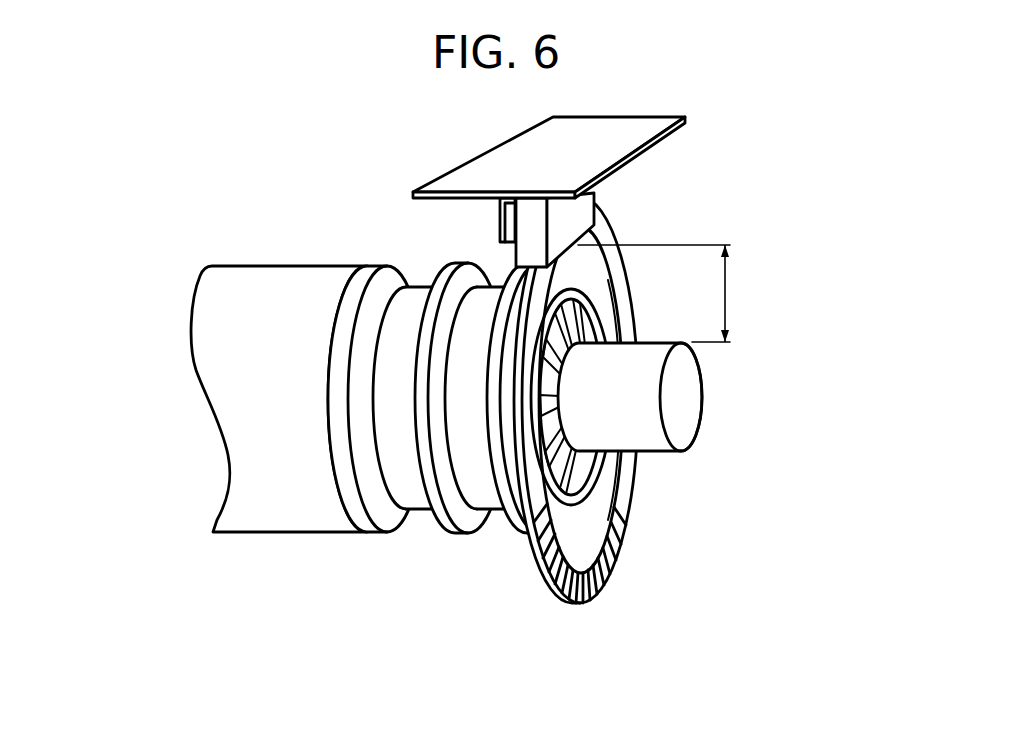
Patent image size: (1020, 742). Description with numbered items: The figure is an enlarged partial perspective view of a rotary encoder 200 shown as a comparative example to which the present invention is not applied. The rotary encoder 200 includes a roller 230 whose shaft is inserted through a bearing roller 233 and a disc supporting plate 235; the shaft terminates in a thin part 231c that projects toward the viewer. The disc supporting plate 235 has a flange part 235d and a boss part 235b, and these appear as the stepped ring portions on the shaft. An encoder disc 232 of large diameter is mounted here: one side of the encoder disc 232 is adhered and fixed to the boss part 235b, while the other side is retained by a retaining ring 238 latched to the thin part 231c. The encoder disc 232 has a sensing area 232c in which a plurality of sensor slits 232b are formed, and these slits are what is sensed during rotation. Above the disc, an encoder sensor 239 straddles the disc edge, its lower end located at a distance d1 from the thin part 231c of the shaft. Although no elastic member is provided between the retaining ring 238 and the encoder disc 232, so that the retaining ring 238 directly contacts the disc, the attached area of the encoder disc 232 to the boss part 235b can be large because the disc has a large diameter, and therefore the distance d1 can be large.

The rotary encoder 200 is at (381, 175).
The roller 230 is at (259, 525).
The thin part 231c is at (695, 384).
The encoder disc 232 is at (623, 416).
The sensor slits 232b is at (568, 560).
The sensing area 232c is at (596, 481).
The bearing roller 233 is at (358, 512).
The disc supporting plate 235 is at (481, 457).
The boss part 235b is at (482, 507).
The flange part 235d is at (456, 533).
The retaining ring 238 is at (632, 500).
The encoder sensor 239 is at (586, 200).
The distance d1 is at (730, 295).